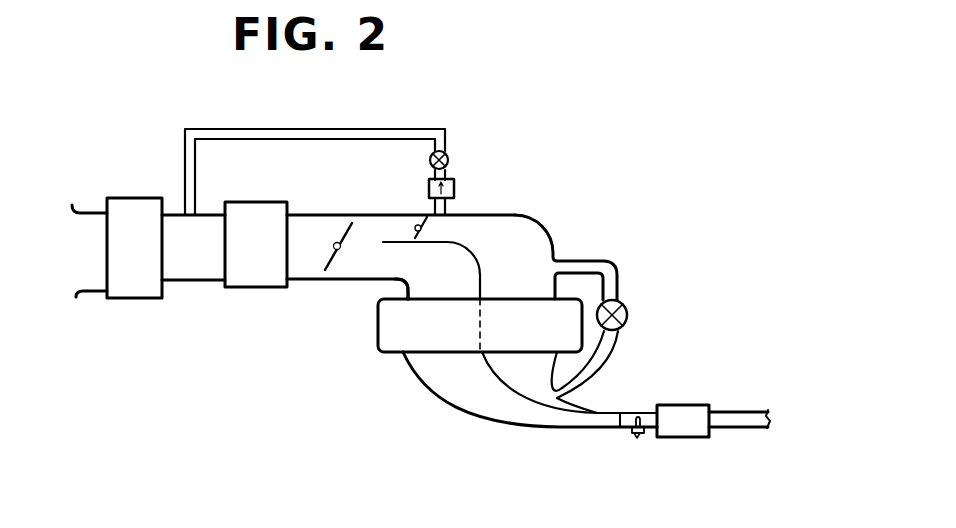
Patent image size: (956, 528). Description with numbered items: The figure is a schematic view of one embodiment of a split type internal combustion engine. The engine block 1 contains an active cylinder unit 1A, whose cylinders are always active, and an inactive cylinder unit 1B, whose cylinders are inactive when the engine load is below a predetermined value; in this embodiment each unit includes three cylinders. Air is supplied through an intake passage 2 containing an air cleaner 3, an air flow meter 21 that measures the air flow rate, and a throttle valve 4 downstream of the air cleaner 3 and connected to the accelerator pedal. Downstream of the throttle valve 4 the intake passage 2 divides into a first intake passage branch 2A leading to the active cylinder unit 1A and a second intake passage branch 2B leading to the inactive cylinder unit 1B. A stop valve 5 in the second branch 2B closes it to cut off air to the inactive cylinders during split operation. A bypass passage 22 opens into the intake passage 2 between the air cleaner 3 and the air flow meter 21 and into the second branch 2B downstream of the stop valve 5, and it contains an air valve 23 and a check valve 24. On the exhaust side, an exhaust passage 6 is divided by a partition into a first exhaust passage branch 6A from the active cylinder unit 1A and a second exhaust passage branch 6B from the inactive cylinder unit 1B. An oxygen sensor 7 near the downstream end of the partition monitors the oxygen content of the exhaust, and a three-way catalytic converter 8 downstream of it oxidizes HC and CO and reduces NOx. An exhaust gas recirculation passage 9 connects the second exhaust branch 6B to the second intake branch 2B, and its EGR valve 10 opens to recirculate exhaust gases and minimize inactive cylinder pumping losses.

The engine block 1 is at (463, 340).
The active cylinder unit 1A is at (437, 324).
The inactive cylinder unit 1B is at (526, 324).
The intake passage 2 is at (324, 282).
The first intake passage branch 2A is at (413, 272).
The second intake passage branch 2B is at (532, 237).
The air cleaner 3 is at (135, 198).
The throttle valve 4 is at (340, 222).
The stop valve 5 is at (426, 220).
The exhaust passage 6 is at (448, 393).
The first exhaust passage branch 6A is at (503, 404).
The second exhaust passage branch 6B is at (572, 398).
The oxygen sensor 7 is at (637, 438).
The three-way catalytic converter 8 is at (688, 403).
The exhaust gas recirculation passage 9 is at (613, 342).
The EGR valve 10 is at (628, 303).
The air flow meter 21 is at (255, 290).
The bypass passage 22 is at (280, 130).
The air valve 23 is at (449, 157).
The check valve 24 is at (455, 188).